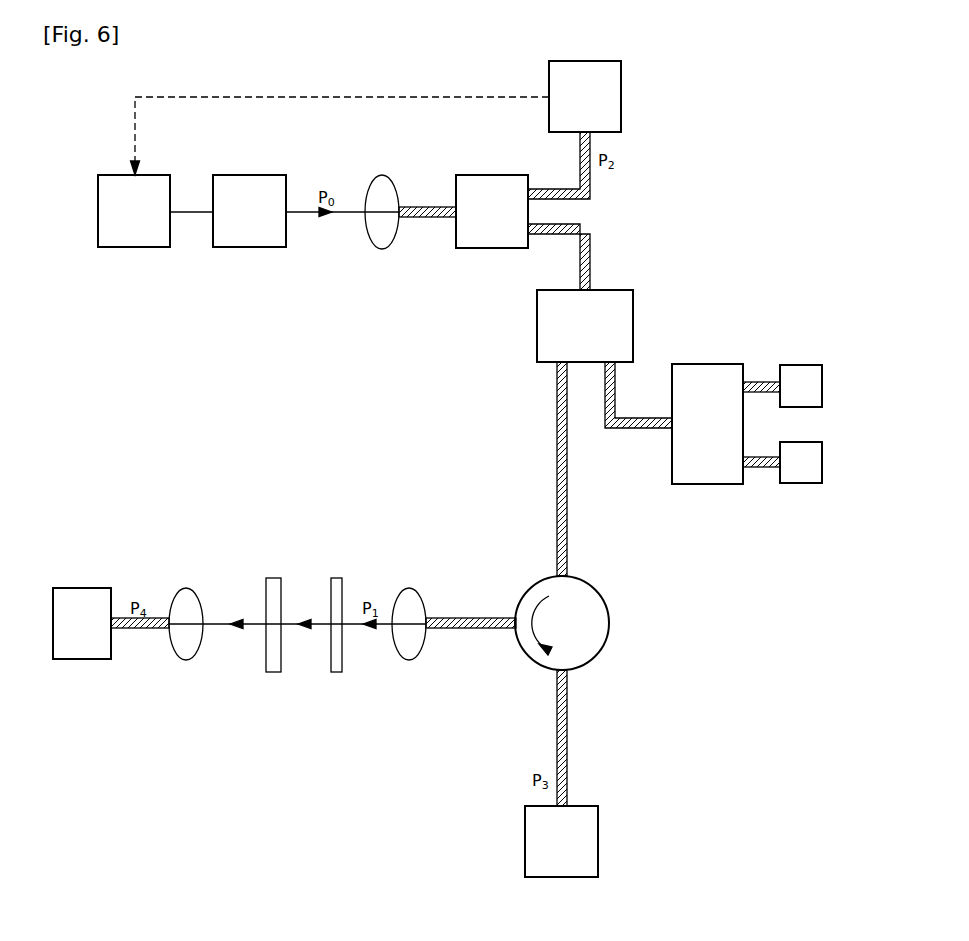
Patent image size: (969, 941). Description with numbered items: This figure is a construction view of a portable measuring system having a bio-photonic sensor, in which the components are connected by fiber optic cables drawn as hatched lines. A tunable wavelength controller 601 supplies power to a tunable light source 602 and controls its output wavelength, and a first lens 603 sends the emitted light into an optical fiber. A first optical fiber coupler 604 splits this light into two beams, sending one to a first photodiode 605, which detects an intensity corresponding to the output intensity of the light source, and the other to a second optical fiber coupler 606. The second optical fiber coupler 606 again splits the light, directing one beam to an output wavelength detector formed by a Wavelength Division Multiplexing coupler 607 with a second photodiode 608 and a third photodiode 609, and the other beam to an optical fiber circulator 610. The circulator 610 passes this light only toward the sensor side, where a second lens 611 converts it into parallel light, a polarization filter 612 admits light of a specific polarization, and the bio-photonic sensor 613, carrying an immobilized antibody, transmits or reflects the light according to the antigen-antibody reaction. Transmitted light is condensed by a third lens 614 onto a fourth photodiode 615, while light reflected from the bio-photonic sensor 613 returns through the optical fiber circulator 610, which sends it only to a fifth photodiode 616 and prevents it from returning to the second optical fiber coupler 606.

The tunable wavelength controller 601 is at (114, 174).
The tunable light source 602 is at (245, 174).
The first lens 603 is at (382, 175).
The first optical fiber coupler 604 is at (491, 174).
The first photodiode 605 is at (621, 91).
The second optical fiber coupler 606 is at (633, 322).
The Wavelength Division Multiplexing (WDM) coupler 607 is at (706, 485).
The second photodiode 608 is at (800, 364).
The third photodiode 609 is at (800, 484).
The optical fiber circulator 610 is at (609, 622).
The second lens 611 is at (409, 587).
The polarization filter 612 is at (336, 577).
The bio-photonic sensor 613 is at (273, 577).
The third lens 614 is at (186, 587).
The fourth photodiode 615 is at (82, 587).
The fifth photodiode 616 is at (598, 836).